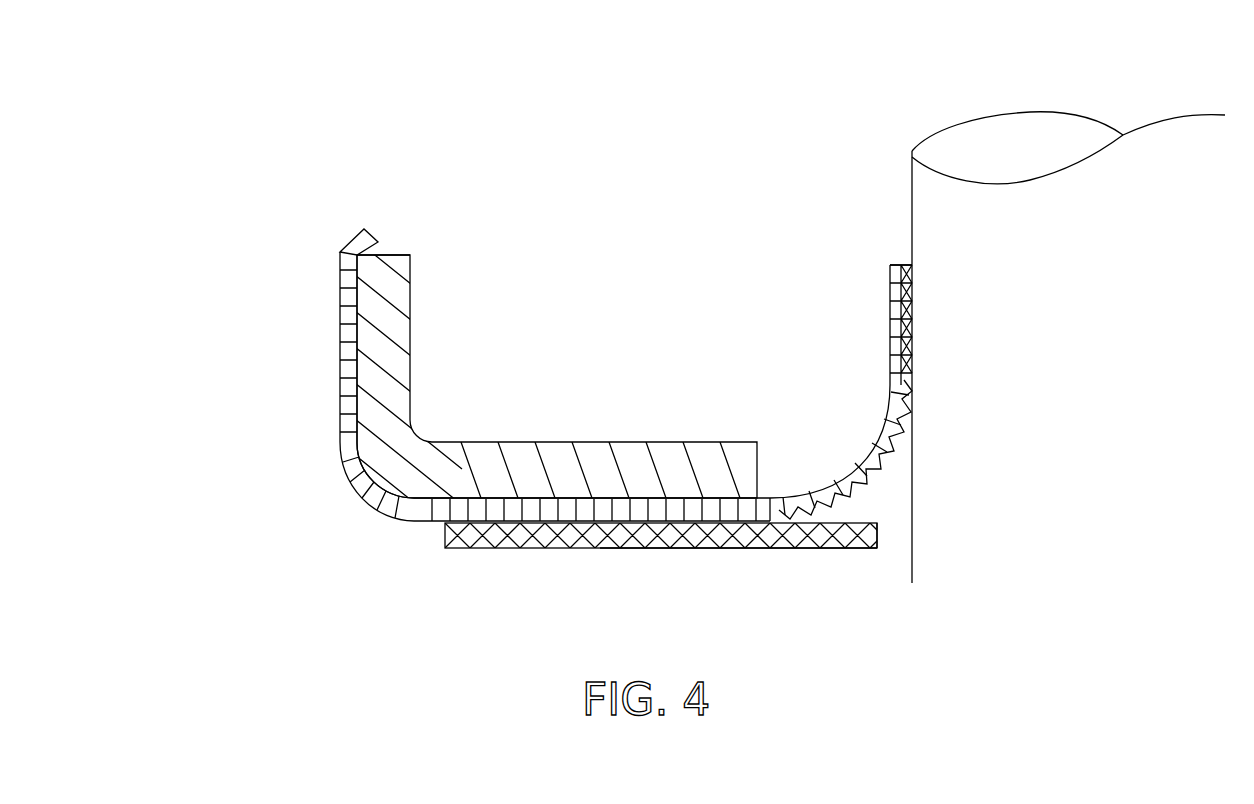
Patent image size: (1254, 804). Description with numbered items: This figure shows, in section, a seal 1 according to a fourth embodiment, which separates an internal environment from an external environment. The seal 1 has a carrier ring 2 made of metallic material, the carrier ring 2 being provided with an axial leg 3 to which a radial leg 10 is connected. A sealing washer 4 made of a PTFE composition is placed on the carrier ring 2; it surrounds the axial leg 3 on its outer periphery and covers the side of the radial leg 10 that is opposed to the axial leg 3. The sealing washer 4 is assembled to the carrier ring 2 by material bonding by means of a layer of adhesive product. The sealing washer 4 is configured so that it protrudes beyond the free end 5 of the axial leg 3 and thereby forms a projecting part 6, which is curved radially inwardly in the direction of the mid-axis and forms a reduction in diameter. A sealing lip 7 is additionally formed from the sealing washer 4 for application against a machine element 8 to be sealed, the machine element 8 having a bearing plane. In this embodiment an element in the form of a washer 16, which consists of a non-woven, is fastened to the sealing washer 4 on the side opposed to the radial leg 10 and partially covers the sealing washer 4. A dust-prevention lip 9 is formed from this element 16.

The seal 1 is at (615, 266).
The carrier ring 2 is at (686, 443).
The axial leg 3 is at (380, 315).
The sealing washer 4 is at (598, 548).
The free end 5 is at (392, 255).
The projecting part 6 is at (353, 243).
The sealing lip 7 is at (888, 312).
The machine element 8 is at (978, 153).
The dust-prevention lip 9 is at (865, 550).
The radial leg 10 is at (572, 458).
The element in the form of a washer 16 is at (732, 548).